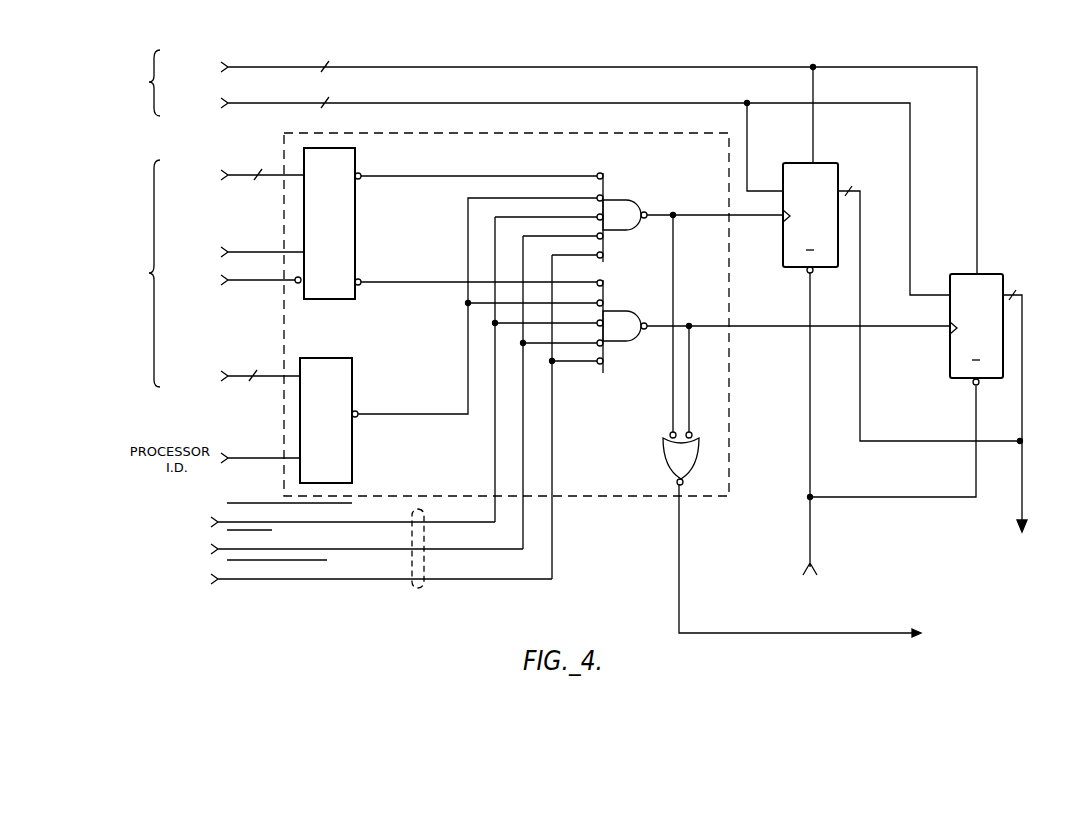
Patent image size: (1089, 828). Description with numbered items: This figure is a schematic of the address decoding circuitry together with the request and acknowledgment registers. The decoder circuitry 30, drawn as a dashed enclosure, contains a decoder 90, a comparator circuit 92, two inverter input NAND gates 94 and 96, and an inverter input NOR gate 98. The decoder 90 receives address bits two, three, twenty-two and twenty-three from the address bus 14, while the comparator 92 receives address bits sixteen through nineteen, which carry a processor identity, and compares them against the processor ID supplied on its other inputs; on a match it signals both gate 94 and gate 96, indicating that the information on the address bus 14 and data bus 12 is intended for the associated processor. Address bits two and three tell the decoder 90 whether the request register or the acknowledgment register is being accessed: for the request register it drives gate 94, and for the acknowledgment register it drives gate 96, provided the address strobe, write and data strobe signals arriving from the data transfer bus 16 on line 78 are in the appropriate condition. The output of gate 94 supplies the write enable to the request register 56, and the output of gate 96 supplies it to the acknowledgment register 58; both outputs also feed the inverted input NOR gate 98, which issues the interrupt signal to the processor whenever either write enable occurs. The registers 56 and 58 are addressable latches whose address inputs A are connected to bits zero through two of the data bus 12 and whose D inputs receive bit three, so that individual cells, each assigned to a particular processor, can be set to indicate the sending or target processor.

The data bus 12 is at (528, 172).
The address bus 14 is at (182, 273).
The data transfer bus 16 is at (346, 545).
The decoder circuitry 30 is at (598, 497).
The request register 56 is at (828, 163).
The acknowledgment register 58 is at (995, 274).
The line 78 is at (424, 586).
The decoder 90 is at (355, 214).
The comparator circuit 92 is at (352, 376).
The inverter input NAND gate 94 is at (633, 200).
The inverter input NAND gate 96 is at (633, 311).
The inverter input NOR gate 98 is at (697, 466).